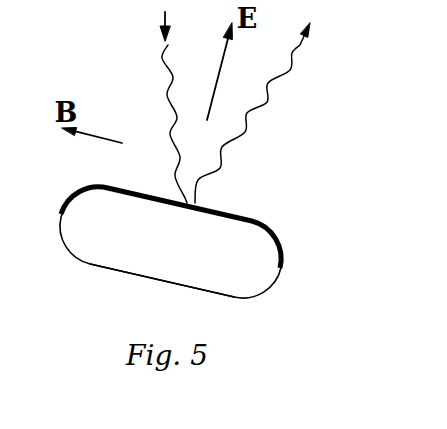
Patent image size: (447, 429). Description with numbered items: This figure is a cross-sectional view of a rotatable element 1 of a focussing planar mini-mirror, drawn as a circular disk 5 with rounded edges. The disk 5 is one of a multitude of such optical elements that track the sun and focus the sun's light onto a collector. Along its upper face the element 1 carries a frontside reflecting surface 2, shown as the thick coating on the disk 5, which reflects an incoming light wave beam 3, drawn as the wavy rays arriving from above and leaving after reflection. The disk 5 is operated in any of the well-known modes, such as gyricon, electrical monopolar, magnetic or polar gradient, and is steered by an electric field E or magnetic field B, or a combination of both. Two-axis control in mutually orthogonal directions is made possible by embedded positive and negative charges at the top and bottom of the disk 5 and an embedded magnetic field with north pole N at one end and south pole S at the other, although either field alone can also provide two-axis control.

The rotatable element 1 is at (121, 312).
The frontside reflecting surface 2 is at (262, 220).
The light wave beam 3 is at (172, 83).
The circular disk 5 is at (108, 272).